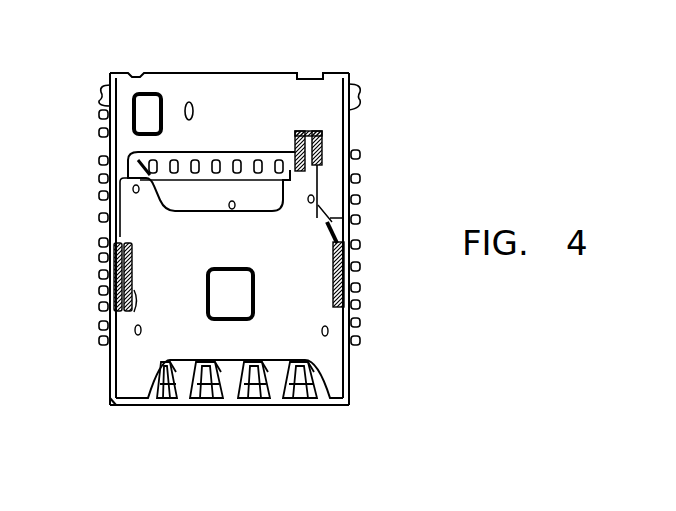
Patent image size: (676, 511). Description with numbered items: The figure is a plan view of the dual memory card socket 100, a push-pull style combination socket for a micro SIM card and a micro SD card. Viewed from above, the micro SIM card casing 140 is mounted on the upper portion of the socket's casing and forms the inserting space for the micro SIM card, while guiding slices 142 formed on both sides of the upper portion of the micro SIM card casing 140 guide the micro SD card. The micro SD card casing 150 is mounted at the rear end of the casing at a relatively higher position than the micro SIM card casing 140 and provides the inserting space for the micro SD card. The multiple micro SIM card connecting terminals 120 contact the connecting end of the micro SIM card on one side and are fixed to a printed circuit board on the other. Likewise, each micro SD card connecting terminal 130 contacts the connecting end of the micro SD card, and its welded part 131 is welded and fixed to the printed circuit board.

The dual memory card socket 100 is at (60, 42).
The micro SD card casing 150 is at (220, 72).
The micro SD card connecting terminal 130 is at (284, 153).
The welded part 131 is at (360, 255).
The guiding slice 142 is at (108, 313).
The micro SIM card casing 140 is at (344, 377).
The micro SIM card connecting terminal 120 is at (250, 408).